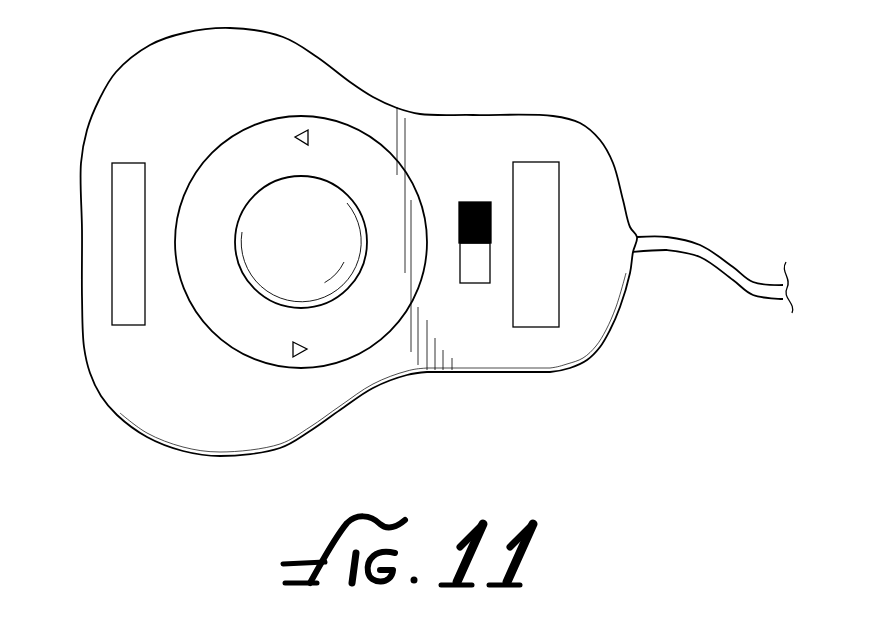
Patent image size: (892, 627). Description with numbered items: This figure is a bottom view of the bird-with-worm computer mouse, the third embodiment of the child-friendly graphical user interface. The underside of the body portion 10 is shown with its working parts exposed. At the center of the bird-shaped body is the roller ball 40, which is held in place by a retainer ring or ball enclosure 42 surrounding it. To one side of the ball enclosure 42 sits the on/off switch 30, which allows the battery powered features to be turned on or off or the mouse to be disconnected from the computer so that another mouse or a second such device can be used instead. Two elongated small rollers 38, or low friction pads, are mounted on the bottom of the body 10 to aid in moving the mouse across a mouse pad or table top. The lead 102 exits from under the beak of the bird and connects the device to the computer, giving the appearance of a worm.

The body portion 10 is at (473, 143).
The on/off switch 30 is at (473, 272).
The small rollers 38 is at (127, 190).
The roller ball 40 is at (308, 280).
The retainer ring 42 is at (347, 153).
The lead 102 is at (715, 272).